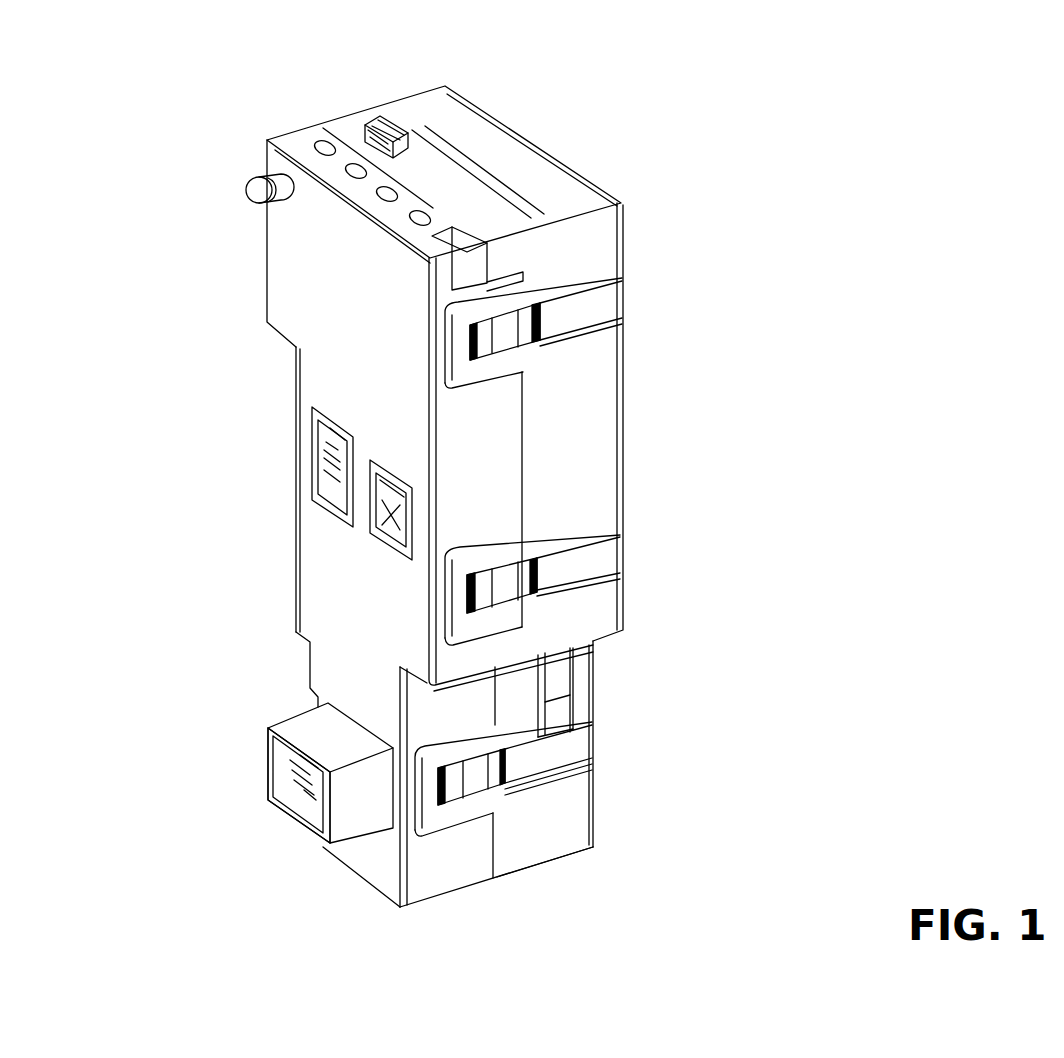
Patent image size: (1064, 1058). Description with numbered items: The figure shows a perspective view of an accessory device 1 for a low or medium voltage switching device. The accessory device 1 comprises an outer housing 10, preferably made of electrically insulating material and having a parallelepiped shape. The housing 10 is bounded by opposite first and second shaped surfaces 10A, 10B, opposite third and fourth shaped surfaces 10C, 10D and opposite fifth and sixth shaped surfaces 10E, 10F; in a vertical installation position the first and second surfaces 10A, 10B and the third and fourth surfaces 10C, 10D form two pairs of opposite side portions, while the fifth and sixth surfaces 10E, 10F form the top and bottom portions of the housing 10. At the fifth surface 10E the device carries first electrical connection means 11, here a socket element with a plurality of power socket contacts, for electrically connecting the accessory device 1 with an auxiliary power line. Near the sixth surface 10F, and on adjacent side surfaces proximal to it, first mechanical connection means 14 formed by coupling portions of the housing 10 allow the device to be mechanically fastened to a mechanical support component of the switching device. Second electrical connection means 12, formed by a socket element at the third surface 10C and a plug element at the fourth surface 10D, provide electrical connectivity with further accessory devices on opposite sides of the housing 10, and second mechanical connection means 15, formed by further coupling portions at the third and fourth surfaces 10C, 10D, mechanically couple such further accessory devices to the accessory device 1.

The accessory device 1 is at (491, 499).
The outer housing 10 is at (471, 499).
The first shaped surface 10A is at (592, 414).
The second shaped surface 10B is at (278, 400).
The third shaped surface 10C is at (313, 549).
The fourth shaped surface 10D is at (625, 705).
The fifth shaped surface 10E is at (545, 167).
The sixth shaped surface 10F is at (461, 903).
The first electrical connection means 11 is at (425, 117).
The second electrical connection means 12 is at (286, 773).
The first mechanical connection means 14 is at (568, 840).
The second mechanical connection means 15 is at (240, 195).